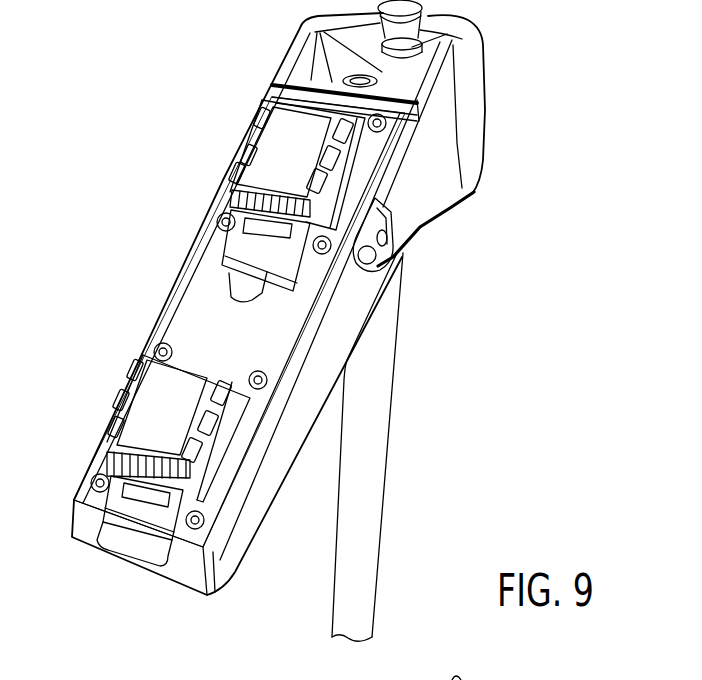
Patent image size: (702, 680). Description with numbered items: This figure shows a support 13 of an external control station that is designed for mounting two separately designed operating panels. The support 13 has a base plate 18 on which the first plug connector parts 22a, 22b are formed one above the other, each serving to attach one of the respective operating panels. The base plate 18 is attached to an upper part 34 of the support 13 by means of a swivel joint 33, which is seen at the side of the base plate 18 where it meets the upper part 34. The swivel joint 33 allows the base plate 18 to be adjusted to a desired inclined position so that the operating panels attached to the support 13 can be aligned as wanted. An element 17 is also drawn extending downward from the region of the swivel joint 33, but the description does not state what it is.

The support 13 is at (180, 184).
The strap 17 is at (377, 402).
The base plate 18 is at (213, 307).
The first plug connector part 22a is at (281, 153).
The first plug connector part 22b is at (150, 420).
The swivel joint 33 is at (408, 256).
The upper part 34 is at (479, 97).